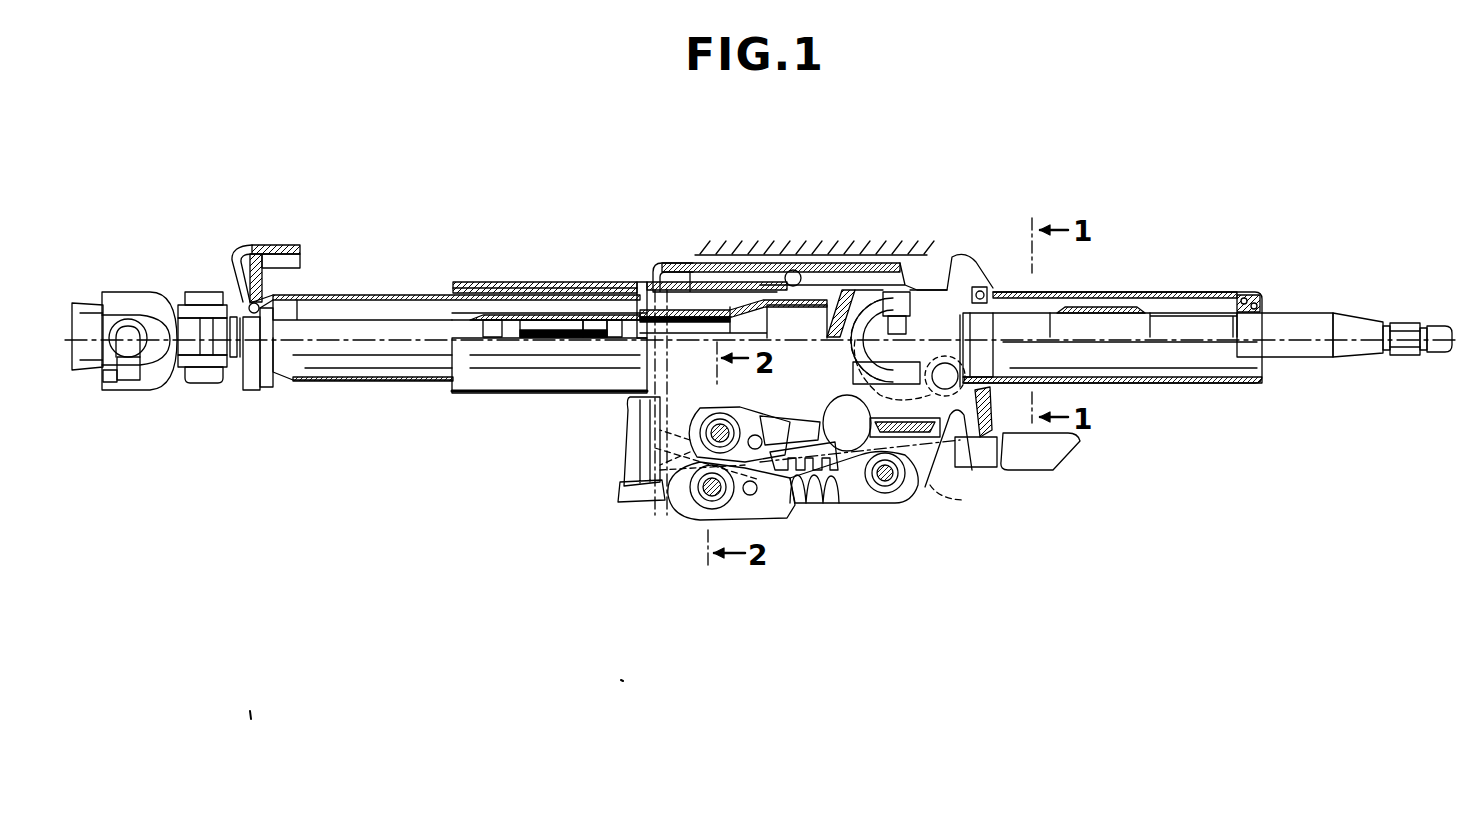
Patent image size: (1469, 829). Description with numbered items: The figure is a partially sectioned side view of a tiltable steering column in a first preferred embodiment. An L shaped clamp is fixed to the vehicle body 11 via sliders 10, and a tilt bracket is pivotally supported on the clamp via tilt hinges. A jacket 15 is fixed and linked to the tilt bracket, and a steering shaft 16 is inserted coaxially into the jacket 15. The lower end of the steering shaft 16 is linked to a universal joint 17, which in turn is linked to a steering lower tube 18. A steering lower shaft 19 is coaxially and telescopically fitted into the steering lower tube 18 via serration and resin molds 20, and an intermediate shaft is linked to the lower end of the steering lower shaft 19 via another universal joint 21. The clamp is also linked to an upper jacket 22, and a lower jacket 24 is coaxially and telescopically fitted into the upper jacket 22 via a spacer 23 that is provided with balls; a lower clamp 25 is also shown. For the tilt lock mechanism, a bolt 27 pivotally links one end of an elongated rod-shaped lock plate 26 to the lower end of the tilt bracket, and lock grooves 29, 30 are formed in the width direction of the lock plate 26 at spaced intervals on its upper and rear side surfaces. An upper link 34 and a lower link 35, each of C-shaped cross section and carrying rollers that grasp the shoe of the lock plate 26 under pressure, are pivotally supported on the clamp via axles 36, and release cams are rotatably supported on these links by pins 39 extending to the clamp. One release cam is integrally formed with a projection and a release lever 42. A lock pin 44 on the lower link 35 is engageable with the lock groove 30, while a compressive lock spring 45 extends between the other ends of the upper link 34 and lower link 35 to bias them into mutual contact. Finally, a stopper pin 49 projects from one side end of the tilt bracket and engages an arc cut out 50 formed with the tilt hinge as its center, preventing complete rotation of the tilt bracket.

The slider 10 is at (785, 266).
The vehicle body 11 is at (874, 252).
The jacket 15 is at (1210, 292).
The steering shaft 16 is at (1312, 325).
The universal joint 17 is at (928, 317).
The steering lower tube 18 is at (683, 272).
The steering lower shaft 19 is at (370, 292).
The resin mold 20 is at (508, 337).
The universal joint 21 is at (152, 383).
The upper jacket 22 is at (600, 282).
The spacer 23 is at (545, 292).
The lower jacket 24 is at (437, 282).
The lower clamp 25 is at (277, 246).
The lock plate 26 is at (840, 503).
The bolt 27 is at (887, 493).
The lock groove 29 is at (780, 445).
The lock groove 30 is at (815, 505).
The upper link 34 is at (767, 403).
The lower link 35 is at (712, 510).
The axle 36 is at (703, 410).
The pin 39 is at (753, 435).
The release lever 42 is at (977, 465).
The lock pin 44 is at (812, 503).
The compressive lock spring 45 is at (623, 427).
The stopper pin 49 is at (980, 390).
The arc cut out 50 is at (993, 473).